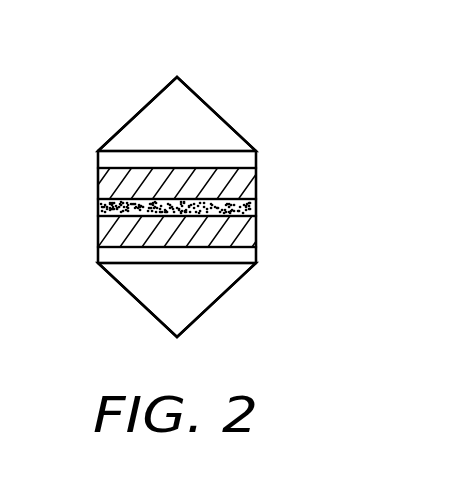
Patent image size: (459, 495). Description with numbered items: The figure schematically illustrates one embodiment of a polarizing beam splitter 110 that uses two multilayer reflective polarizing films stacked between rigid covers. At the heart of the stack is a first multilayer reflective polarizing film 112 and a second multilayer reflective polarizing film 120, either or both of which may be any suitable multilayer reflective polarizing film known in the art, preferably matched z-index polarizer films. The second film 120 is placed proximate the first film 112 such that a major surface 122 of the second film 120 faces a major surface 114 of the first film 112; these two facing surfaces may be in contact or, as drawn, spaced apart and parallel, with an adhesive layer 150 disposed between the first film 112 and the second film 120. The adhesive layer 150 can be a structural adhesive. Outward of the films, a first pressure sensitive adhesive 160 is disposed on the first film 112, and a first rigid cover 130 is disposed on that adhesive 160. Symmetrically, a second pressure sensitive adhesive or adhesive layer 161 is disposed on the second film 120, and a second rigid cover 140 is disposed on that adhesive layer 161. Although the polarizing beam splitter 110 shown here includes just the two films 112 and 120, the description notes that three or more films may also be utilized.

The polarizing beam splitter 110 is at (243, 88).
The first rigid cover 130 is at (150, 118).
The second rigid cover 140 is at (203, 293).
The first pressure sensitive adhesive 160 is at (250, 160).
The second pressure sensitive adhesive 161 is at (253, 253).
The first multilayer reflective polarizing film 112 is at (243, 180).
The second multilayer reflective polarizing film 120 is at (243, 228).
The adhesive layer 150 is at (243, 211).
The major surface of the second film 122 is at (133, 205).
The major surface of the first film 114 is at (103, 215).